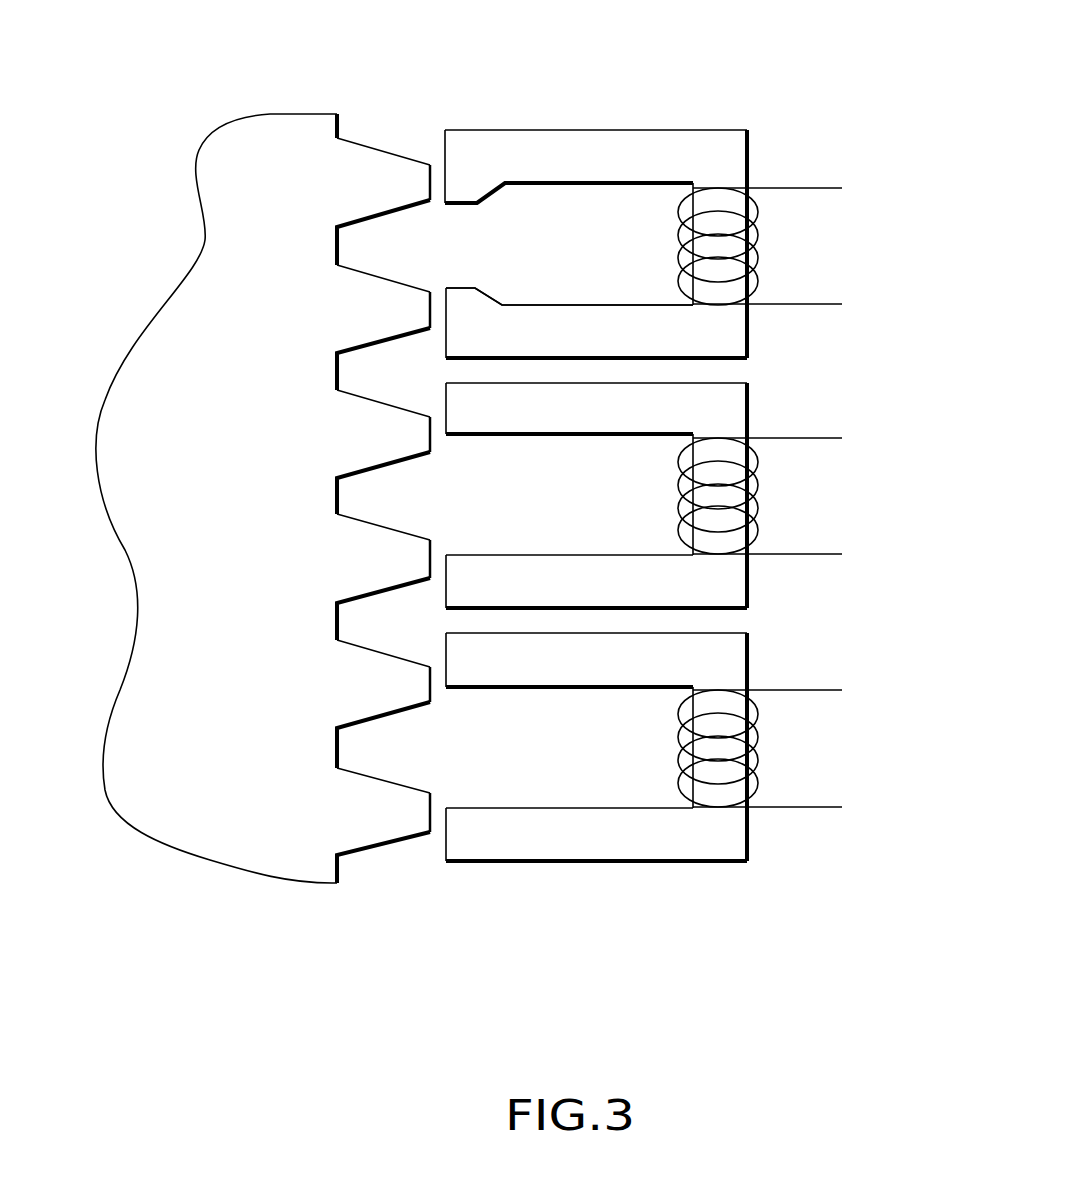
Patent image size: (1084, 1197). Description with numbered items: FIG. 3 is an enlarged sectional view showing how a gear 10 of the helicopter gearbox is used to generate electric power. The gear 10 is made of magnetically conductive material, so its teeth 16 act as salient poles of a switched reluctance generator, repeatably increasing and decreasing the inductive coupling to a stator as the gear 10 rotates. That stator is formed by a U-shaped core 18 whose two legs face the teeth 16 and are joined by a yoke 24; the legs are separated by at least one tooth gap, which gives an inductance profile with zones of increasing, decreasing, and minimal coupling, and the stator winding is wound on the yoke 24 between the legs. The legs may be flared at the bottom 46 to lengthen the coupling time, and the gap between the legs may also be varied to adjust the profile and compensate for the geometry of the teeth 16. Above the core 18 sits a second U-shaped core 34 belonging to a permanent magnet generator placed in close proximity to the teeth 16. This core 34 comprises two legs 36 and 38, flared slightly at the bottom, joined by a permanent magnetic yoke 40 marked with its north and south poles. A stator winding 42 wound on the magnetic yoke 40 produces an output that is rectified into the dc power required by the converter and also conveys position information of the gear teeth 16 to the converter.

The gear 10 is at (218, 549).
The teeth 16 is at (400, 153).
The U-shaped core 18 is at (668, 807).
The yoke 24 is at (677, 679).
The second U-shaped core 34 is at (673, 190).
The leg 36 is at (452, 171).
The leg 38 is at (452, 347).
The permanent magnetic yoke 40 is at (748, 153).
The stator winding 42 is at (750, 240).
The bottom 46 is at (410, 860).